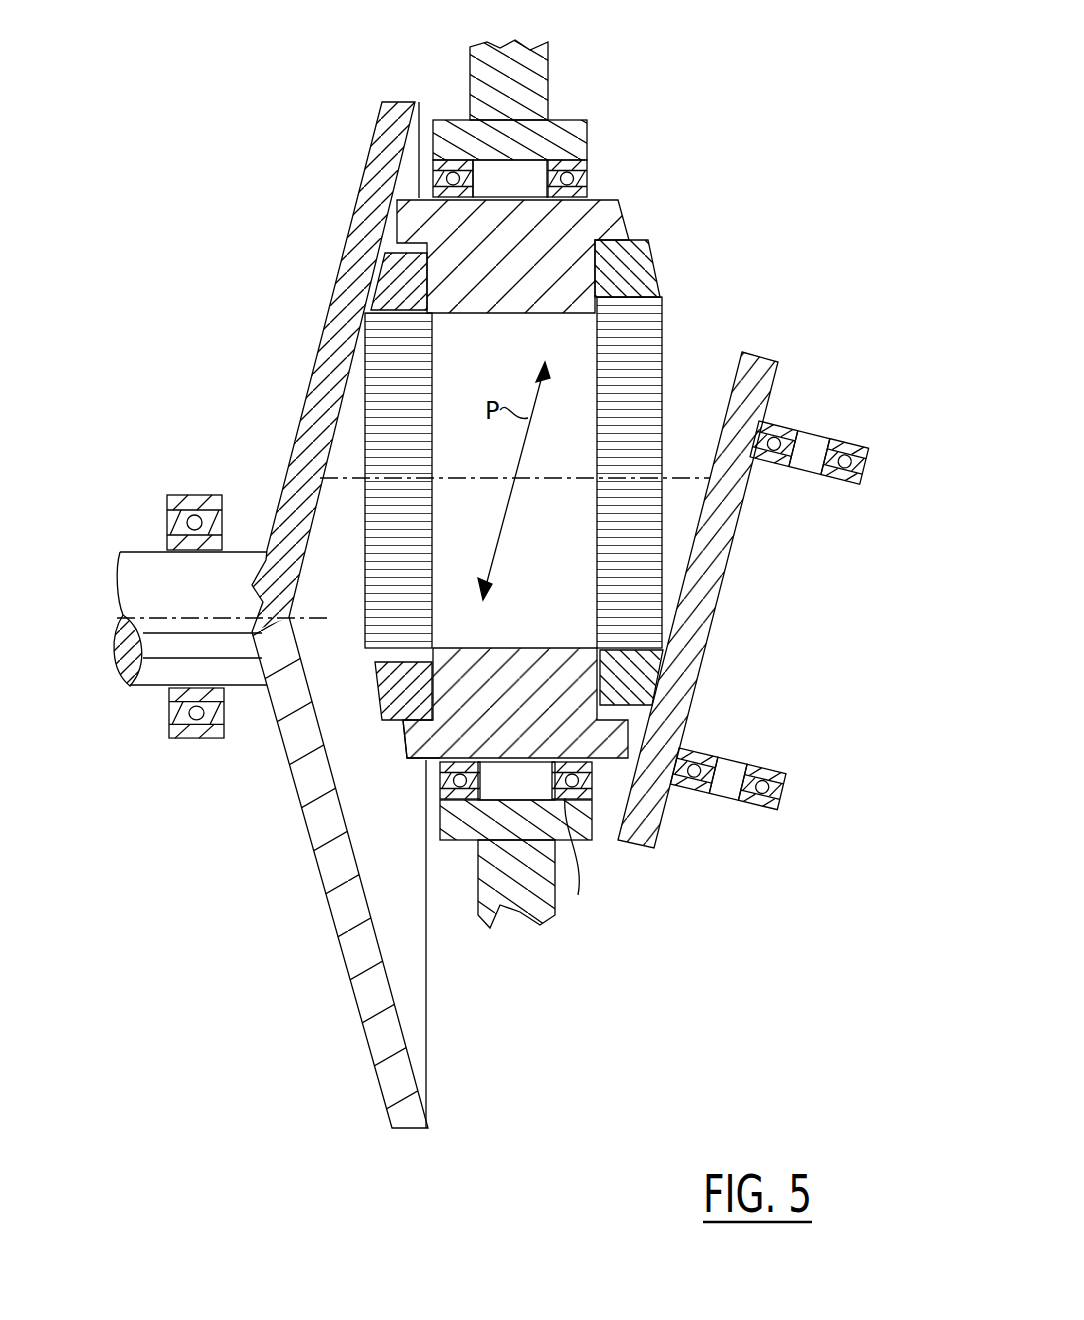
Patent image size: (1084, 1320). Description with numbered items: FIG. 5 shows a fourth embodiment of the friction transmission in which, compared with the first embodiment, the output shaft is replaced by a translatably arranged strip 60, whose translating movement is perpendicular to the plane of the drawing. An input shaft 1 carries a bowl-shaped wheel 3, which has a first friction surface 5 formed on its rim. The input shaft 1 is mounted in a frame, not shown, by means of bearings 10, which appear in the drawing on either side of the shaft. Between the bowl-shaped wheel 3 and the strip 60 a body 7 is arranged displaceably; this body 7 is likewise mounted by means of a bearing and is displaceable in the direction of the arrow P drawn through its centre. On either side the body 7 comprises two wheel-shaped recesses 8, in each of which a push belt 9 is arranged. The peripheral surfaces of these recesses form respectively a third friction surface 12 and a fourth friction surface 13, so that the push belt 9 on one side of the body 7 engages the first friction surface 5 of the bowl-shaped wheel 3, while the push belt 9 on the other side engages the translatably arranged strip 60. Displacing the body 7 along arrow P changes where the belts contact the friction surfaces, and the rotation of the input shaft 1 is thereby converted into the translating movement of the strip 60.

The input shaft 1 is at (142, 572).
The bowl-shaped wheel 3 is at (368, 154).
The first friction surface 5 is at (420, 137).
The body 7 is at (627, 191).
The wheel-shaped recess 8 is at (405, 247).
The push belt 9 is at (383, 707).
The bearing 10 is at (178, 497).
The third friction surface 12 is at (397, 733).
The fourth friction surface 13 is at (627, 240).
The translatably arranged strip 60 is at (688, 647).